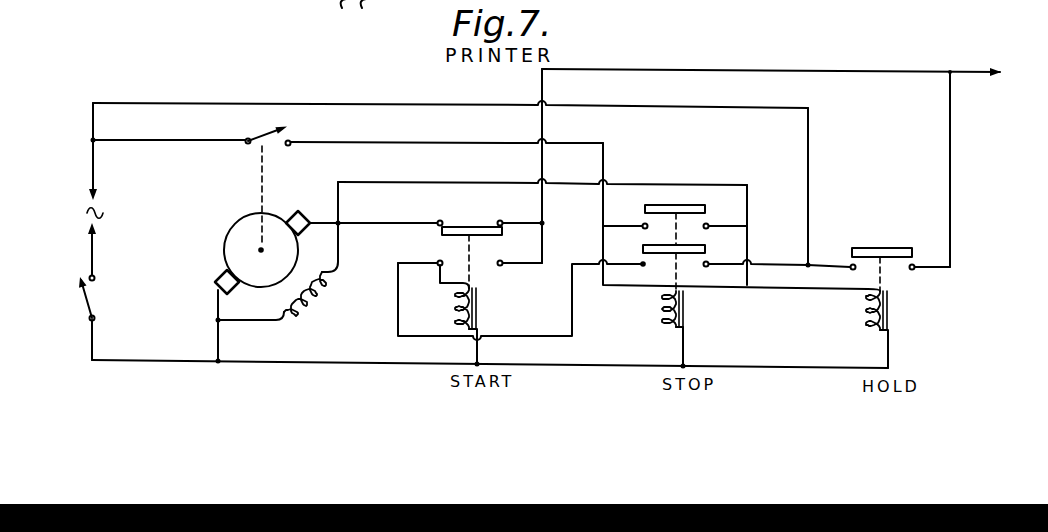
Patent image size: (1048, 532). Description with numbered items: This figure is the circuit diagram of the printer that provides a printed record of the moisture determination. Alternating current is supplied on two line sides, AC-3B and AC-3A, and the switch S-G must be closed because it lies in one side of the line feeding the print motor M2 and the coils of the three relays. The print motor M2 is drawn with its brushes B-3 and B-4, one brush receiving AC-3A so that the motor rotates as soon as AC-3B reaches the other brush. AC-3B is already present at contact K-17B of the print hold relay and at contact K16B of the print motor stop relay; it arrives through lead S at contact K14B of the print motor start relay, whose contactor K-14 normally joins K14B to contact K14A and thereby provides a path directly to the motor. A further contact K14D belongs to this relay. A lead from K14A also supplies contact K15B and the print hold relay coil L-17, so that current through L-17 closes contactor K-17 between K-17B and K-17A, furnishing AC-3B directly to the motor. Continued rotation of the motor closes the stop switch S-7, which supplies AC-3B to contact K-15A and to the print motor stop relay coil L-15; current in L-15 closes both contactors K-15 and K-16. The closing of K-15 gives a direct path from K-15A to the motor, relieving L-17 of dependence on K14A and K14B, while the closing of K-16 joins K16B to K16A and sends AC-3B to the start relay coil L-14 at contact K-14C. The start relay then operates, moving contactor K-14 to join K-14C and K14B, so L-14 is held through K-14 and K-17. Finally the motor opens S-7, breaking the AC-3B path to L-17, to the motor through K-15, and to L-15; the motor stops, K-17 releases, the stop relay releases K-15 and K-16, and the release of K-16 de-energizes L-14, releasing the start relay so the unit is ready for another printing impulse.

The lead s S is at (1004, 74).
The stop switch S-7 is at (259, 177).
The A.-C. line side B AC-3B is at (122, 170).
The A.-C. line side A AC-3A is at (121, 249).
The switch S-6 S-G is at (72, 318).
The print motor M2 is at (247, 246).
The motor brush B-3 is at (312, 214).
The motor brush B-4 is at (207, 282).
The print motor start relay contact K14A is at (390, 217).
The print motor start relay contact K14B is at (520, 217).
The contactor of print motor start relay K-14 is at (472, 244).
The print motor start relay contact K-14C is at (432, 268).
The print motor start relay contact K14D is at (520, 257).
The print motor start relay coil L-14 is at (490, 326).
The print motor stop relay contact K-15A is at (625, 222).
The print motor stop relay contact K15B is at (726, 222).
The contactor of print motor stop relay K-15 is at (720, 224).
The print motor stop relay contact K16A is at (626, 261).
The print motor stop relay contact K16B is at (756, 261).
The contactor of print motor stop relay K-16 is at (719, 267).
The print motor stop relay coil L-15 is at (696, 328).
The print hold relay contact K-17B is at (832, 264).
The contactor of print hold relay K-17 is at (882, 257).
The print hold relay contact K-17A is at (932, 264).
The print hold relay coil L-17 is at (900, 329).